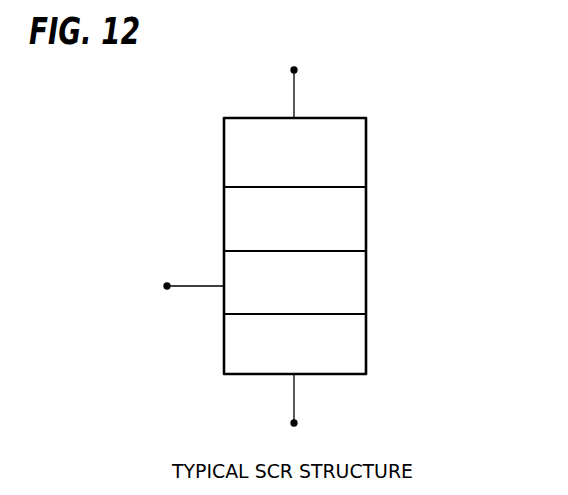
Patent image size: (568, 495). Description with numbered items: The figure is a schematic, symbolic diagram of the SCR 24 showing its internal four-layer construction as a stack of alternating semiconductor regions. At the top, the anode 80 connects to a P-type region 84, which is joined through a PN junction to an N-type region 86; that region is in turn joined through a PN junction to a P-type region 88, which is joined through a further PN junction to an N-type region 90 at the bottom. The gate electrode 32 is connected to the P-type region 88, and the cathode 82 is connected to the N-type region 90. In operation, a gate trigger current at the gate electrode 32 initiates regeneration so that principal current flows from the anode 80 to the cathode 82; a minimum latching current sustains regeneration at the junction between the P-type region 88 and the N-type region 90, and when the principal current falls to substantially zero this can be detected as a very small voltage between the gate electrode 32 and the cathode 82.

The SCR 24 is at (480, 277).
The gate electrode 32 is at (167, 283).
The anode 80 is at (294, 70).
The cathode 82 is at (294, 423).
The P-type region 84 is at (349, 166).
The N-type region 86 is at (349, 229).
The P-type region 88 is at (349, 291).
The N-type region 90 is at (349, 354).